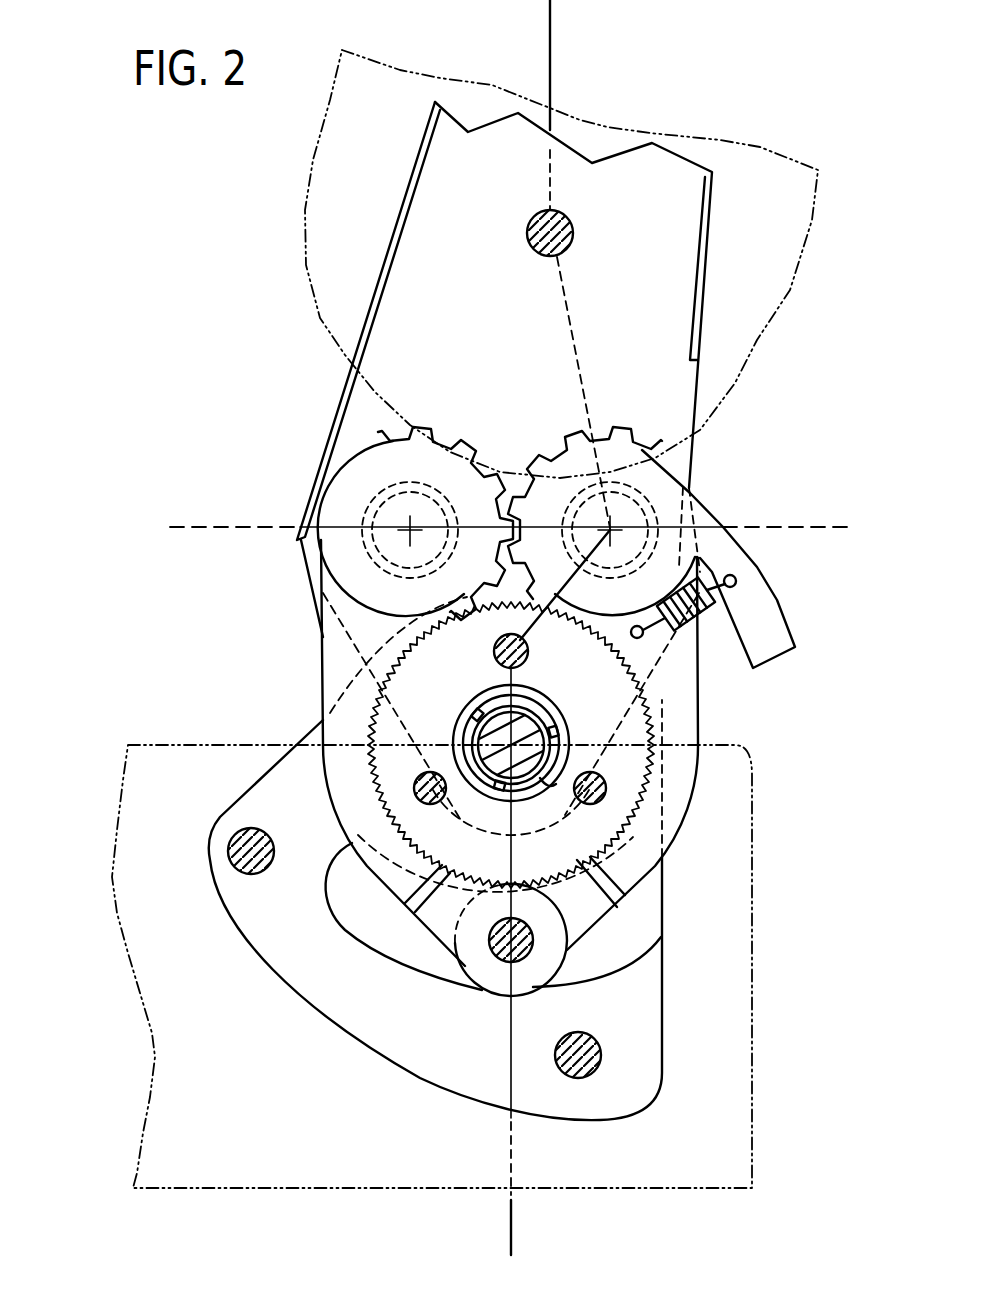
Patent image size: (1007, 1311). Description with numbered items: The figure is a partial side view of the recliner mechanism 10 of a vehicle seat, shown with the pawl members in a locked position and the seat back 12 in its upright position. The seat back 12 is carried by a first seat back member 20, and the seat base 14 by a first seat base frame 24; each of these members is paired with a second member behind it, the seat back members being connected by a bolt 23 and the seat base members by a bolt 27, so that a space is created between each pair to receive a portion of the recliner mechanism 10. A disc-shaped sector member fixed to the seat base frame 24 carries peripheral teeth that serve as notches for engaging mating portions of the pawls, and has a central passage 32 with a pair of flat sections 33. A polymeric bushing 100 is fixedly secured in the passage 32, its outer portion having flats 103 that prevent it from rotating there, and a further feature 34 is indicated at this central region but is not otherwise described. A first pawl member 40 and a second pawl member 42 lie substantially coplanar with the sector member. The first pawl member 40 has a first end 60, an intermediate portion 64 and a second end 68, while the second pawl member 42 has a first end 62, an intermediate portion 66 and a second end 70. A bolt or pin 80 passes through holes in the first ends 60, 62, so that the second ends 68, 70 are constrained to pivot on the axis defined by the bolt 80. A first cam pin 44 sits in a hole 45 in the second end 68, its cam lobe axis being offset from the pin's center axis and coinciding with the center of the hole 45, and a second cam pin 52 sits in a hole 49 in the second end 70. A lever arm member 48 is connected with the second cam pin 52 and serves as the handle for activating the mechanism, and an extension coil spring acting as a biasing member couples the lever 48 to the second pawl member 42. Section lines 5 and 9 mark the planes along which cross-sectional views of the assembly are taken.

The section line 5- 5 is at (540, 15).
The section line 9- 9 is at (180, 515).
The recliner mechanism 10 is at (178, 352).
The seat back 12 is at (303, 222).
The seat base 14 is at (123, 788).
The first seat back frame member 20 is at (667, 167).
The bolt 23 is at (574, 232).
The first seat base frame member 24 is at (350, 1032).
The bolt 27 is at (242, 868).
The passage 32 is at (550, 697).
The flat sections 33 is at (480, 700).
The slot 34 is at (486, 717).
The first pawl member 40 is at (517, 687).
The second pawl member 42 is at (708, 707).
The first cam pin 44 is at (354, 511).
The hole 45 is at (437, 490).
The lever arm member 48 is at (782, 636).
The hole 49 is at (567, 580).
The second cam pin 52 is at (658, 498).
The first end of first pawl member 60 is at (435, 945).
The first end of second pawl member 62 is at (573, 948).
The intermediate portion of first pawl member 64 is at (337, 783).
The intermediate portion of second pawl member 66 is at (682, 815).
The second end of first pawl member 68 is at (322, 455).
The second end of second pawl member 70 is at (680, 462).
The bolt or pin 80 is at (500, 958).
The bushing 100 is at (592, 706).
The flats 103 is at (555, 775).